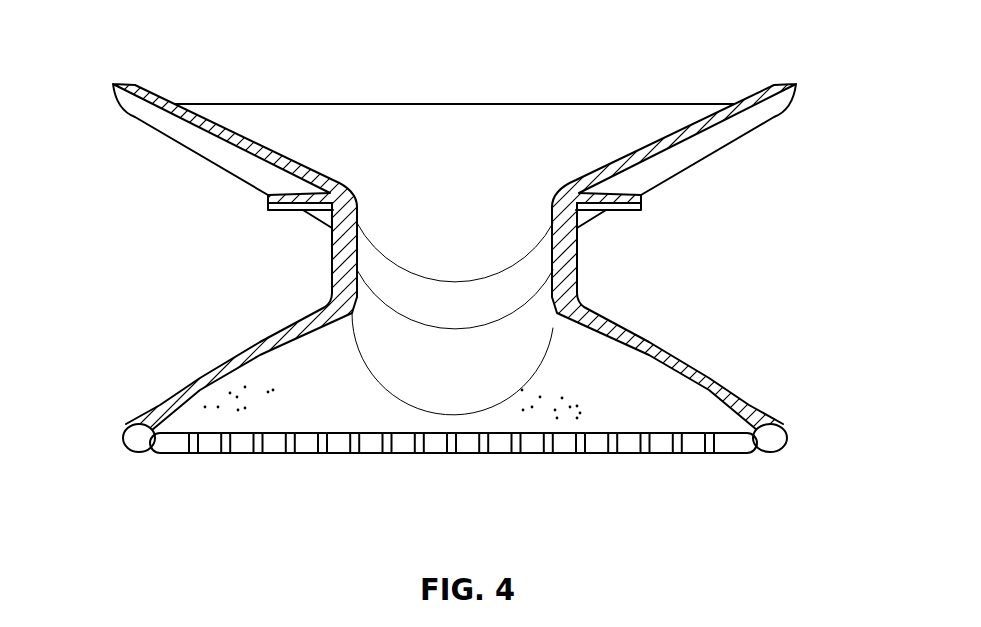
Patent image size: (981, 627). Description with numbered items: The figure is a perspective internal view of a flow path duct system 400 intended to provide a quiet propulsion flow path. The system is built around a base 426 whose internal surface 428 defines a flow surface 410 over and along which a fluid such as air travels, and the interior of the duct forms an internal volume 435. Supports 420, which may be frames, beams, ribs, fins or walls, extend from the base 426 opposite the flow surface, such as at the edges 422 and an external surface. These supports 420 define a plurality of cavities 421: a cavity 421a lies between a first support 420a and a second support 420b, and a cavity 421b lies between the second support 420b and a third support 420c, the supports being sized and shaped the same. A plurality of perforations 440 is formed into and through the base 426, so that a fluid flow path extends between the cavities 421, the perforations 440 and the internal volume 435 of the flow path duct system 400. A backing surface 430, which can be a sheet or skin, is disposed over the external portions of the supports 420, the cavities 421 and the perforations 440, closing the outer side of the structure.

The flow path duct system 400 is at (110, 48).
The flow surface 410 is at (473, 423).
The supports 420 is at (258, 453).
The first support 420a is at (320, 453).
The second support 420b is at (385, 453).
The third support 420c is at (417, 453).
The cavities 421 is at (208, 453).
The cavity 421a is at (352, 453).
The cavity 421b is at (407, 453).
The edges 422 is at (745, 120).
The base 426 is at (555, 369).
The internal surface 428 is at (648, 397).
The backing surface 430 is at (126, 426).
The internal volume 435 is at (460, 177).
The perforations 440 is at (190, 400).